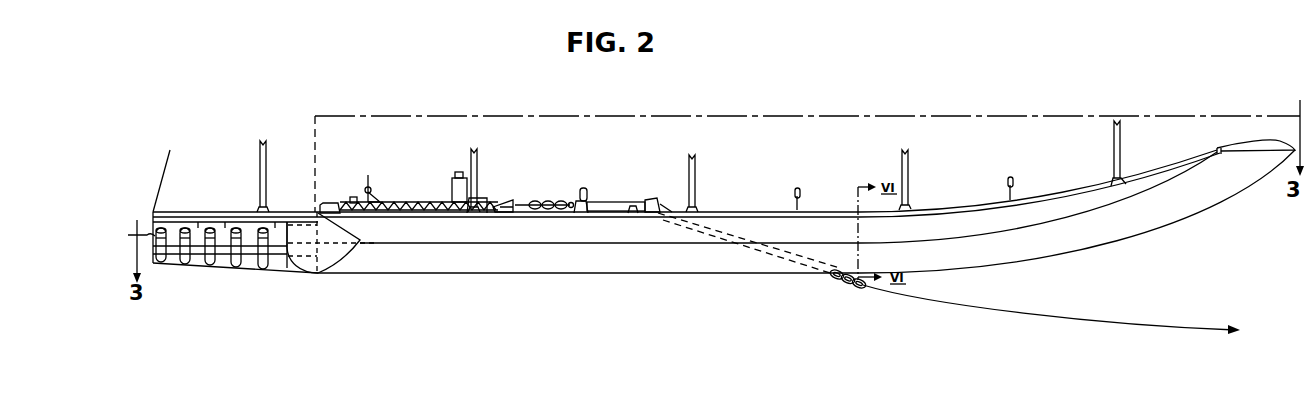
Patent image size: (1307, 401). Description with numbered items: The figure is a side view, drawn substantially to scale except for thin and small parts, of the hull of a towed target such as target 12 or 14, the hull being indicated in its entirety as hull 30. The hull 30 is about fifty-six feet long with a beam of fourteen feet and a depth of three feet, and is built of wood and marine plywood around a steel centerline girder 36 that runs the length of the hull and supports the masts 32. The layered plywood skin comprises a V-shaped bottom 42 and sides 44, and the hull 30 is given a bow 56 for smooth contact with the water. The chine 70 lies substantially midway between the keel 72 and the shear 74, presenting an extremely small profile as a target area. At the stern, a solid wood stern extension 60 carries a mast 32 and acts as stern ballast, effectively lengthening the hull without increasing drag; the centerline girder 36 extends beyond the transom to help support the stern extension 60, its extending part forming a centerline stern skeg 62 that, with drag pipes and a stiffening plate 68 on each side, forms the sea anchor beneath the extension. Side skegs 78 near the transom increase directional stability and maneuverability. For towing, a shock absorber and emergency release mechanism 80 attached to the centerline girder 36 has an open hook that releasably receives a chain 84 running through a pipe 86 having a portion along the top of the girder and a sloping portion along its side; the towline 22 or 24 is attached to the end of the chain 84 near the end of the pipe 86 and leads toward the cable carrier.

The towed target 12 is at (769, 154).
The towed target 14 is at (820, 154).
The second cable portion or towline 22 is at (1068, 317).
The third cable portion or towline 24 is at (1068, 317).
The hull 30 is at (781, 274).
The masts 32 is at (267, 180).
The centerline girder 36 is at (935, 210).
The V-shaped bottom 42 is at (636, 262).
The sides 44 is at (553, 237).
The bow 56 is at (1165, 220).
The stern extension 60 is at (180, 223).
The centerline stern skeg 62 is at (226, 262).
The stiffening plate 68 is at (200, 247).
The chine 70 is at (697, 247).
The keel 72 is at (717, 275).
The shear 74 is at (768, 212).
The side skegs 78 is at (330, 262).
The shock absorber and emergency release mechanism 80 is at (432, 193).
The chain 84 is at (857, 285).
The pipe 86 is at (633, 202).